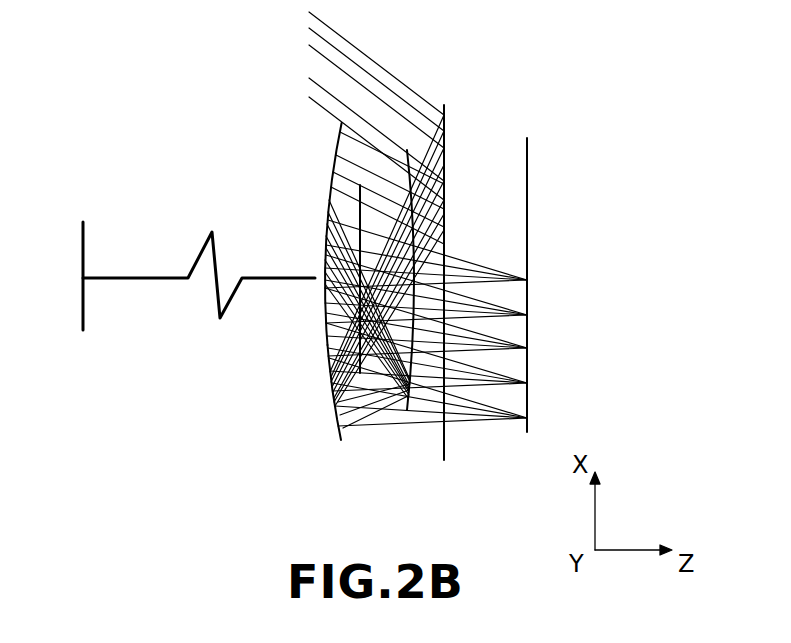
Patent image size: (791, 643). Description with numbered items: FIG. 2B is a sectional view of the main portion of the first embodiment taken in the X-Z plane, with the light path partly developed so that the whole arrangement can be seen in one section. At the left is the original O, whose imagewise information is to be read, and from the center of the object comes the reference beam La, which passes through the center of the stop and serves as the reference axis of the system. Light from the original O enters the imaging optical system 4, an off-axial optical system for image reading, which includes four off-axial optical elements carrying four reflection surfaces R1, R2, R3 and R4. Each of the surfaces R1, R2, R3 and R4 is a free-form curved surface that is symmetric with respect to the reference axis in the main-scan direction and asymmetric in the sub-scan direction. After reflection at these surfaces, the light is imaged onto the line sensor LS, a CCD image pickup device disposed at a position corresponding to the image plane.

The original O is at (83, 246).
The reference beam La is at (150, 280).
The first reflection surface R1 is at (445, 158).
The second reflection surface R2 is at (332, 370).
The third reflection surface R3 is at (408, 408).
The fourth reflection surface R4 is at (327, 317).
The line sensor LS is at (527, 370).
The imaging optical system 4 is at (473, 489).